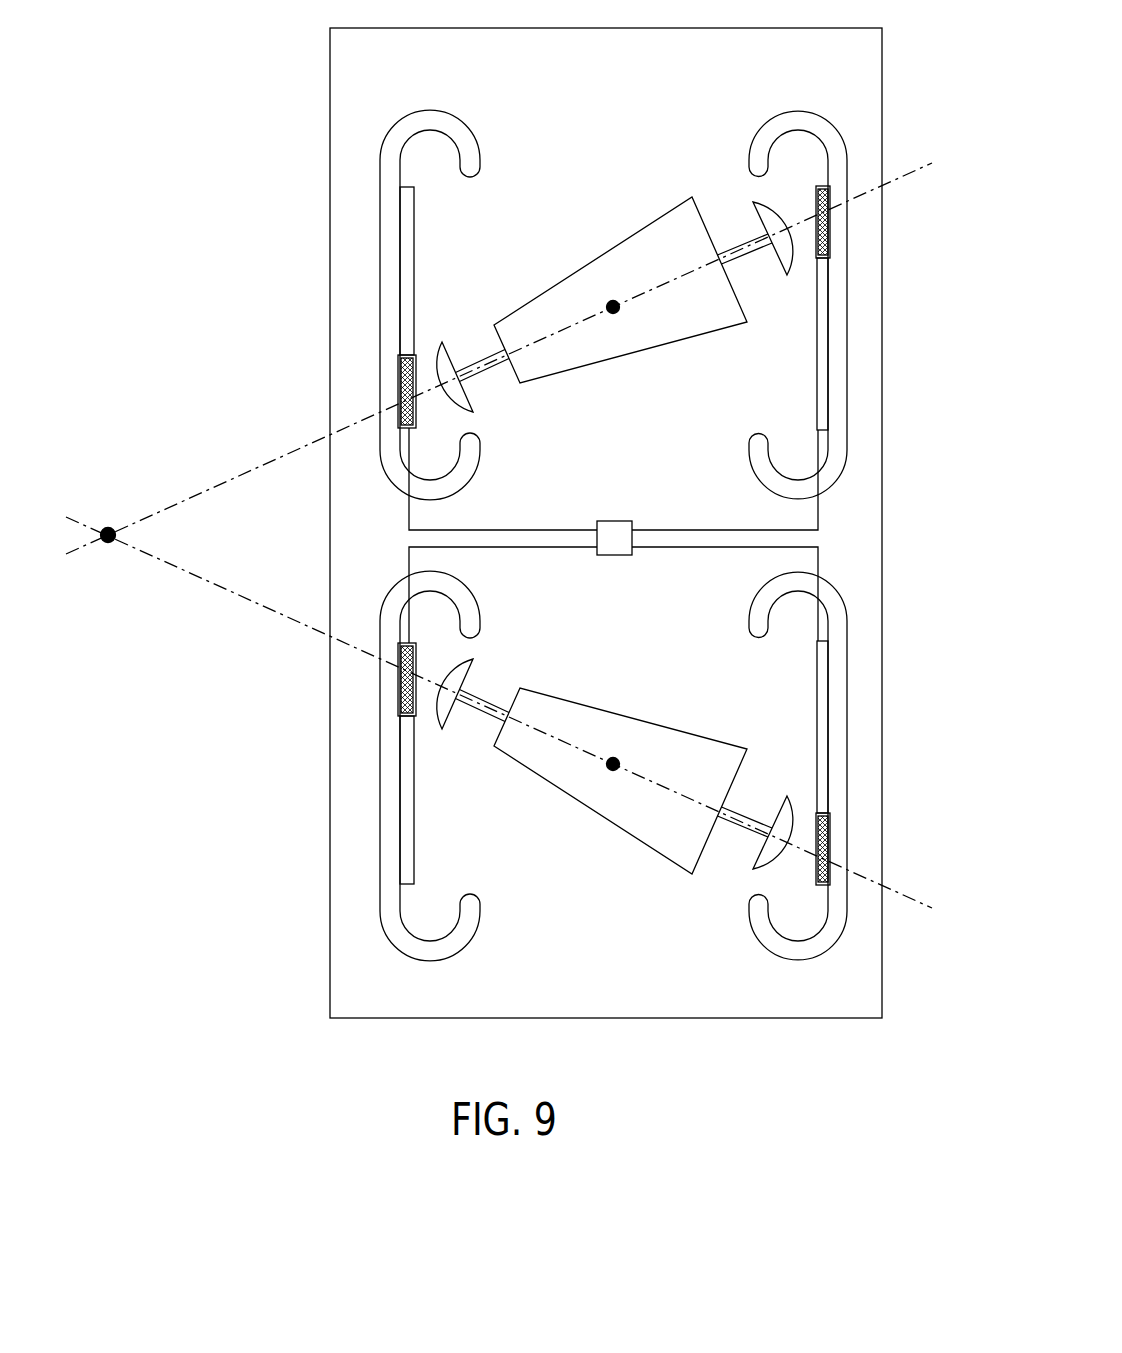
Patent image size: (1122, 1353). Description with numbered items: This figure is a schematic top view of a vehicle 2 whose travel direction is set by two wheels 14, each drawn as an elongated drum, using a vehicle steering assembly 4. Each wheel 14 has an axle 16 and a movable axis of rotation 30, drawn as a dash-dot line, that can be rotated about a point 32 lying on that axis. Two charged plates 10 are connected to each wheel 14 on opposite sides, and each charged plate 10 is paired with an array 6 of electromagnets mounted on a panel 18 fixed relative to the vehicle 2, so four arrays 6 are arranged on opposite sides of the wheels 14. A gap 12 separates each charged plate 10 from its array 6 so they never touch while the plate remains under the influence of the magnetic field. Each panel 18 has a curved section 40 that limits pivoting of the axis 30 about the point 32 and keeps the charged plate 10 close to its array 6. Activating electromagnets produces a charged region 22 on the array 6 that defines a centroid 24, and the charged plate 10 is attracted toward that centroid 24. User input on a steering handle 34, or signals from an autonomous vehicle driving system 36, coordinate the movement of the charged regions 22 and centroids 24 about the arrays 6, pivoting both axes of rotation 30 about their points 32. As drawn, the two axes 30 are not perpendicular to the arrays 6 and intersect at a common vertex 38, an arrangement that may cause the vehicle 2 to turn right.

The vehicle 2 is at (612, 28).
The vehicle steering assembly 4 is at (358, 290).
The array of electromagnets 6 is at (410, 203).
The charged plate 10 is at (755, 220).
The gap 12 is at (800, 207).
The wheel 14 is at (627, 340).
The axle 16 is at (750, 258).
The panel 18 is at (383, 326).
The charged region 22 is at (400, 375).
The centroid 24 is at (405, 400).
The axis of rotation 30 is at (900, 178).
The point 32 is at (607, 300).
The steering handle 34 is at (564, 523).
The autonomous vehicle driving system 36 is at (599, 522).
The common vertex 38 is at (103, 512).
The curved section 40 is at (452, 130).